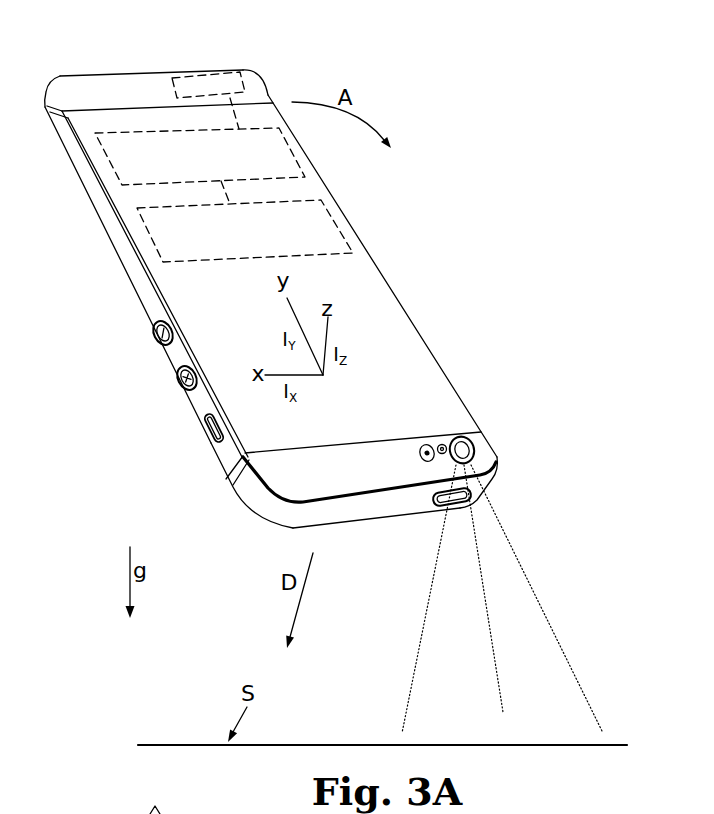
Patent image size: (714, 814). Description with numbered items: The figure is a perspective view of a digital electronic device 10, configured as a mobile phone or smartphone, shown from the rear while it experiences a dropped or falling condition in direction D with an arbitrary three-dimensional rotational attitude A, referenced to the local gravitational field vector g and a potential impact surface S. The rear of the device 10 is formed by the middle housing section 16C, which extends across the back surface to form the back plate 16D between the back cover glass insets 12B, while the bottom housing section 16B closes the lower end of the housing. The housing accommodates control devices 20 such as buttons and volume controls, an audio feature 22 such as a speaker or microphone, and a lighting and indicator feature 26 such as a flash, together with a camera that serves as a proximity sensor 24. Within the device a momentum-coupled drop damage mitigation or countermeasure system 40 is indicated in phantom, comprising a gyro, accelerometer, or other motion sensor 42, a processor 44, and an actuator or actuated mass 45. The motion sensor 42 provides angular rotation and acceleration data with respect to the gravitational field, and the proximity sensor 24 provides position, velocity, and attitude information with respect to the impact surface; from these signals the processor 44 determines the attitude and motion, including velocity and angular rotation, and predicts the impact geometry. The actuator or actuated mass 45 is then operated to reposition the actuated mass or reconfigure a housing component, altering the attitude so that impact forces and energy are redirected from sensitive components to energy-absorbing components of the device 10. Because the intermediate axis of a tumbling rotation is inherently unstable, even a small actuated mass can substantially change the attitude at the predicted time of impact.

The digital electronic device 10 is at (302, 39).
The back cover glass inset 12B is at (178, 72).
The bottom housing section 16B is at (338, 516).
The middle housing section 16C is at (118, 245).
The back plate 16D is at (354, 283).
The control device 20 is at (156, 333).
The audio feature 22 is at (443, 445).
The proximity sensor 24 is at (476, 446).
The lighting and indicator feature 26 is at (428, 465).
The countermeasure system 40 is at (111, 77).
The motion sensor 42 is at (287, 142).
The processor 44 is at (330, 212).
The actuator/actuated mass 45 is at (247, 88).